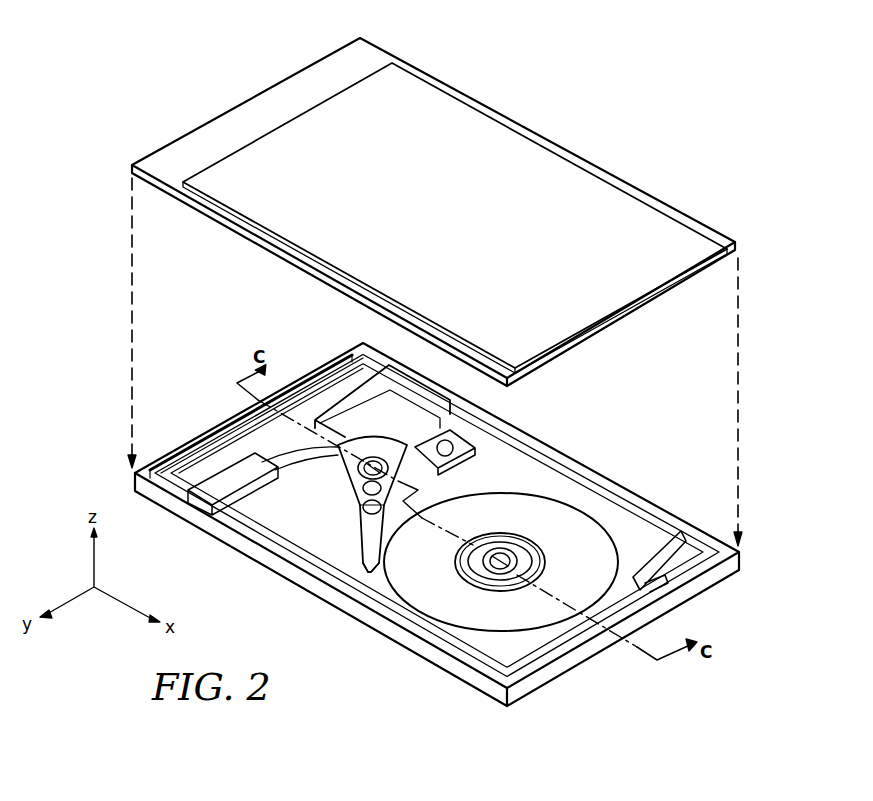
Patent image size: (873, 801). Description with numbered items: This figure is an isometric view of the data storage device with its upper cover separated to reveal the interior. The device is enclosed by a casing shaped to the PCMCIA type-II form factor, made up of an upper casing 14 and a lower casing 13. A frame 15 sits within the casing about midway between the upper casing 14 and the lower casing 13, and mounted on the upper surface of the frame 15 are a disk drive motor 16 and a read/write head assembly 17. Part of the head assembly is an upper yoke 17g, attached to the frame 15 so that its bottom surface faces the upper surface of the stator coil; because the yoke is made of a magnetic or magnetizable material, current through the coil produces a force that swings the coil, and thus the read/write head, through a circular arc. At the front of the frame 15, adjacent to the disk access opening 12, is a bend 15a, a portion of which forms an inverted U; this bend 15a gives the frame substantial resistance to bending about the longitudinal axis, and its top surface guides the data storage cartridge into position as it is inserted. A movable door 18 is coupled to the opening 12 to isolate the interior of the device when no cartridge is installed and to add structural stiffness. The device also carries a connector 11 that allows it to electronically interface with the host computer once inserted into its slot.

The connector 11 is at (342, 370).
The disk access opening 12 is at (565, 665).
The lower casing 13 is at (193, 517).
The upper casing 14 is at (180, 153).
The frame 15 is at (533, 483).
The bend 15a is at (450, 654).
The disk drive motor 16 is at (376, 590).
The read/write head assembly 17 is at (340, 504).
The upper yoke 17g is at (402, 418).
The movable door 18 is at (597, 655).